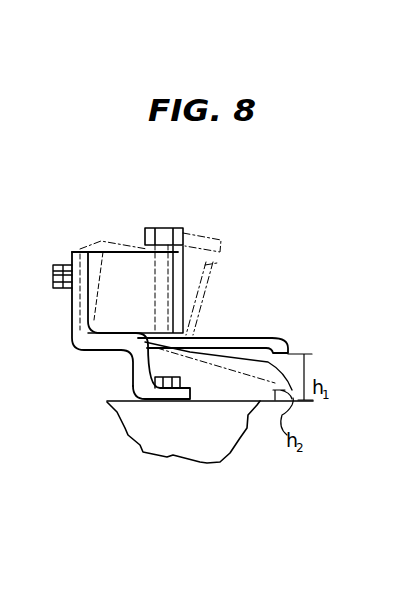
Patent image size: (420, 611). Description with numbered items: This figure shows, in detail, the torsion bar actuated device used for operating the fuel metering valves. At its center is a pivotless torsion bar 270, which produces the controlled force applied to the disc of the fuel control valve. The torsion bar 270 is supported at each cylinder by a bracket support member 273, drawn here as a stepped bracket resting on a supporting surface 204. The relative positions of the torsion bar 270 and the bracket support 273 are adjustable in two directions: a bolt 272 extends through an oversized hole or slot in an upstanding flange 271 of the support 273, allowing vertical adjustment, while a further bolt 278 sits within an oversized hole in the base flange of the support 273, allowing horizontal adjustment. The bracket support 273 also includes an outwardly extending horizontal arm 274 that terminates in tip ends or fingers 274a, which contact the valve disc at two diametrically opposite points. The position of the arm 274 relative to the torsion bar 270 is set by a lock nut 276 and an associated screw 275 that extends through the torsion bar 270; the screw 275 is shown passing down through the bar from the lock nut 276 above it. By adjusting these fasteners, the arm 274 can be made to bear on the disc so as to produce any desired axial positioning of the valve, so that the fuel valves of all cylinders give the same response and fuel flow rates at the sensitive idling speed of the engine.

The support surface 204 is at (210, 434).
The torsion bar 270 is at (143, 296).
The upstanding flange 271 is at (75, 318).
The bolt 272 is at (53, 273).
The bracket support member 273 is at (133, 362).
The horizontal arm 274 is at (255, 338).
The tip ends or fingers 274a is at (288, 352).
The screw 275 is at (158, 272).
The lock nut 276 is at (164, 232).
The further bolt 278 is at (180, 381).